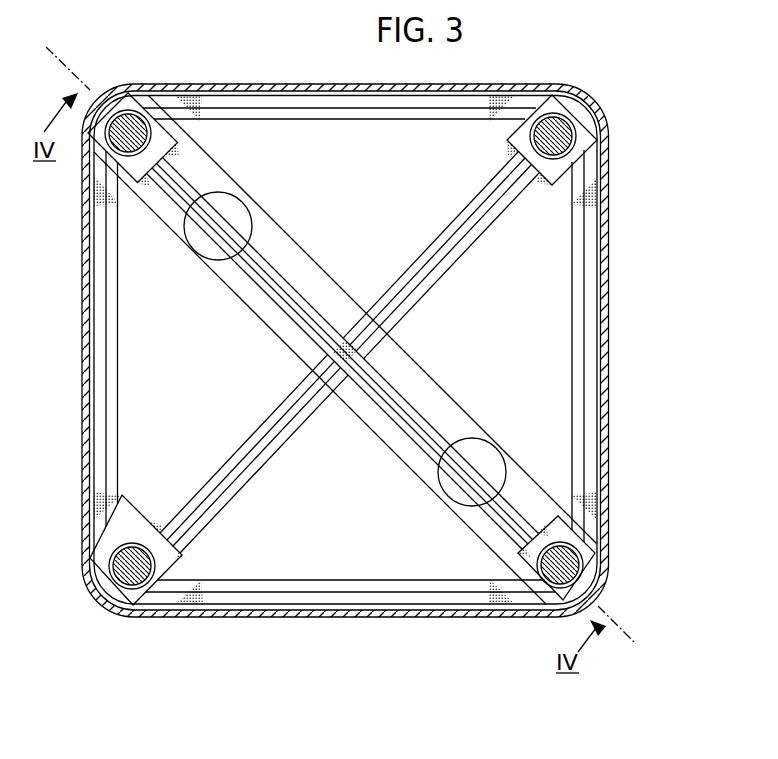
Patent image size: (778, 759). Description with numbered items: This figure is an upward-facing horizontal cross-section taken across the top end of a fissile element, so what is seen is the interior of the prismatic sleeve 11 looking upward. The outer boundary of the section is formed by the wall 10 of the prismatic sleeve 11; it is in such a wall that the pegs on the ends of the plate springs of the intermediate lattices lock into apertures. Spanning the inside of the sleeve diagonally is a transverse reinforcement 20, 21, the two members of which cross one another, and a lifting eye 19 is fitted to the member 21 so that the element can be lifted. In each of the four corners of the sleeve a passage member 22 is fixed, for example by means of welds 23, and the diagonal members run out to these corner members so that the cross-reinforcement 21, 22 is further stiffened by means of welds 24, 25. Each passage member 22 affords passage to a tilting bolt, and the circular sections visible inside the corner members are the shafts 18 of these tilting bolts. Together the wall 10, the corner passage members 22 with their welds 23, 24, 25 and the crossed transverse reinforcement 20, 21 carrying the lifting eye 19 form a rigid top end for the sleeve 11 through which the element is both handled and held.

The wall 10 is at (299, 84).
The prismatic sleeve 11 is at (607, 266).
The shaft of tilting bolt 18 is at (125, 110).
The lifting eye 19 is at (297, 264).
The transverse reinforcement 20 is at (404, 308).
The transverse reinforcement 21 is at (388, 396).
The passage member 22 is at (138, 185).
The weld 23 is at (177, 97).
The weld 24 is at (172, 153).
The weld 25 is at (372, 352).